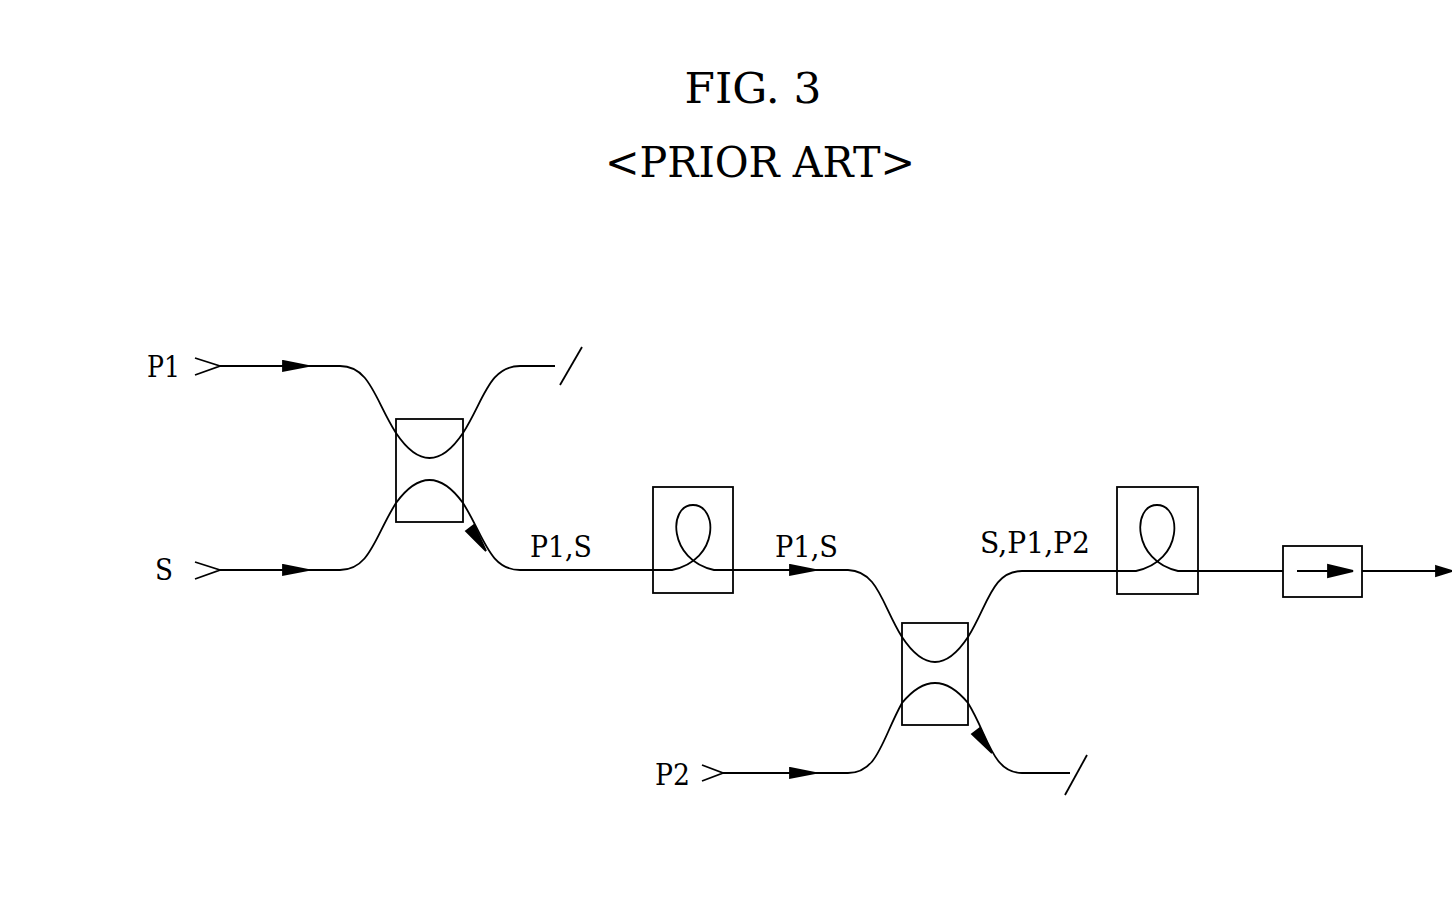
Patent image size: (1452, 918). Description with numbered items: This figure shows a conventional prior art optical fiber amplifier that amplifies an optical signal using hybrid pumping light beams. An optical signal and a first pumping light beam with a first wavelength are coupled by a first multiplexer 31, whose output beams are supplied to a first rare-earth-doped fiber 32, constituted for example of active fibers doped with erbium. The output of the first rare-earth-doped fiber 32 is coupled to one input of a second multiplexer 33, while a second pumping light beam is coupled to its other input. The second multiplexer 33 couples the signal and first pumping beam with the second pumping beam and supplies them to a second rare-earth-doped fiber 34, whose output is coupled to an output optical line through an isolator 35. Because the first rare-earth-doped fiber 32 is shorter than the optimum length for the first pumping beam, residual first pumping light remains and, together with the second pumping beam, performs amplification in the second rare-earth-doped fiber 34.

The first multiplexer 31 is at (432, 522).
The first rare-earth-doped fiber 32 is at (697, 487).
The second multiplexer 33 is at (935, 725).
The second rare-earth-doped fiber 34 is at (1158, 487).
The isolator 35 is at (1320, 546).